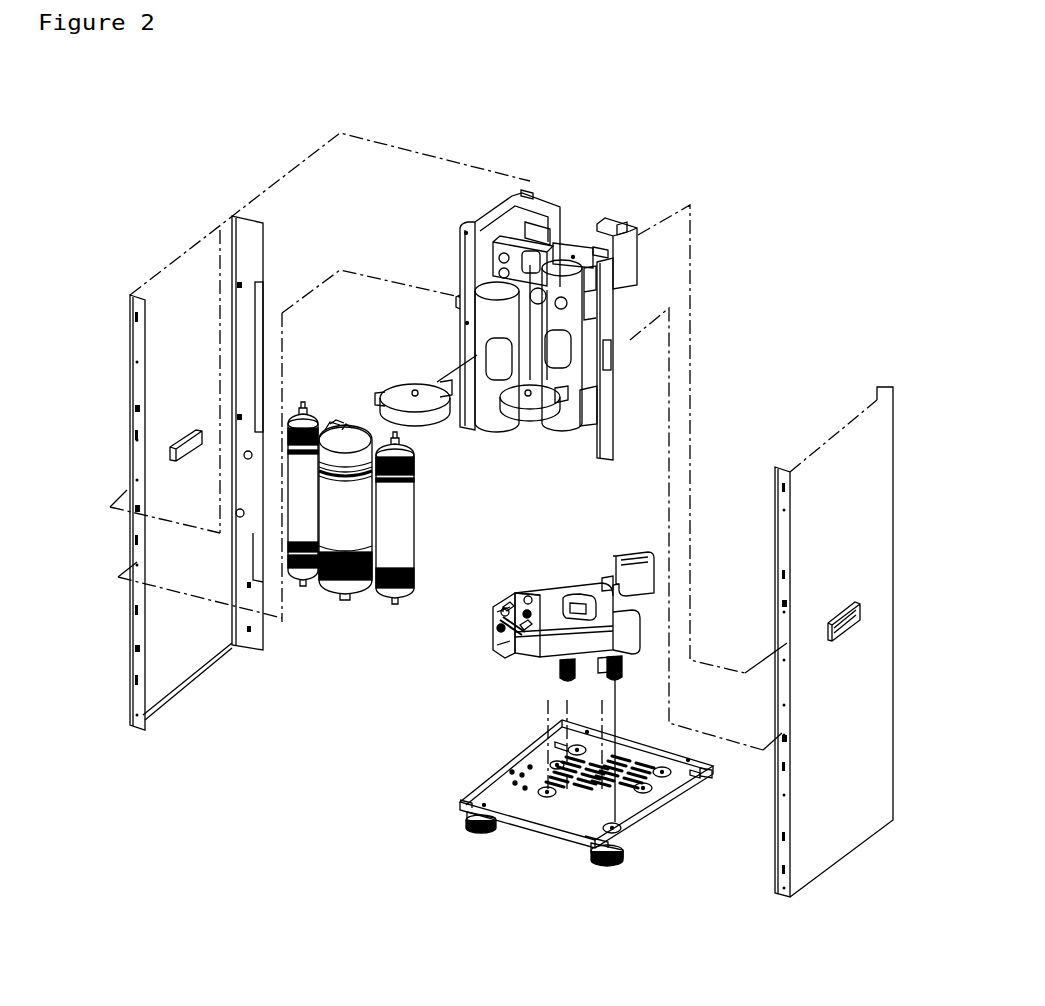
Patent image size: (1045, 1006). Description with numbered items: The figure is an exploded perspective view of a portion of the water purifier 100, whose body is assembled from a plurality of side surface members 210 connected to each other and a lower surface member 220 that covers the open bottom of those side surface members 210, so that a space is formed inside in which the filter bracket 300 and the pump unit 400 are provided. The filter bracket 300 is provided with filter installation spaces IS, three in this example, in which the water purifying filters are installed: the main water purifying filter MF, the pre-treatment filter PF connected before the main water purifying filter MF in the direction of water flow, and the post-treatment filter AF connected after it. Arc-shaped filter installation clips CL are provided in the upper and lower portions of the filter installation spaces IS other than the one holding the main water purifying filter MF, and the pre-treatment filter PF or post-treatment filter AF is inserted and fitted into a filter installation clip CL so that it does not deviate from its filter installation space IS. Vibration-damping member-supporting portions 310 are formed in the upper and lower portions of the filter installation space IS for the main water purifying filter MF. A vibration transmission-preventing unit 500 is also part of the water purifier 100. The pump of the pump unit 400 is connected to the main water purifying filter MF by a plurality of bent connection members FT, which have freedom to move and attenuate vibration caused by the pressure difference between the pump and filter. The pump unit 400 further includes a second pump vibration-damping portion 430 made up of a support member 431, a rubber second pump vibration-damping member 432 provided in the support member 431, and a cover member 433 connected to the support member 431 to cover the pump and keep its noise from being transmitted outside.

The water purifier 100 is at (263, 97).
The side surface member 210 is at (130, 385).
The lower surface member 220 is at (527, 830).
The filter bracket 300 is at (562, 190).
The vibration-damping member-supporting portion 310 is at (606, 226).
The pump unit 400 is at (575, 565).
The second pump vibration-damping portion 430 is at (745, 940).
The support member 431 is at (637, 652).
The second pump vibration-damping member 432 is at (620, 677).
The cover member 433 is at (582, 668).
The vibration transmission-preventing unit 500 is at (500, 428).
The filter installation space IS is at (590, 300).
The filter installation clip CL is at (560, 413).
The pre-treatment filter PF is at (283, 522).
The main water purifying filter MF is at (333, 548).
The post-treatment filter AF is at (385, 555).
The connection member FT is at (508, 625).